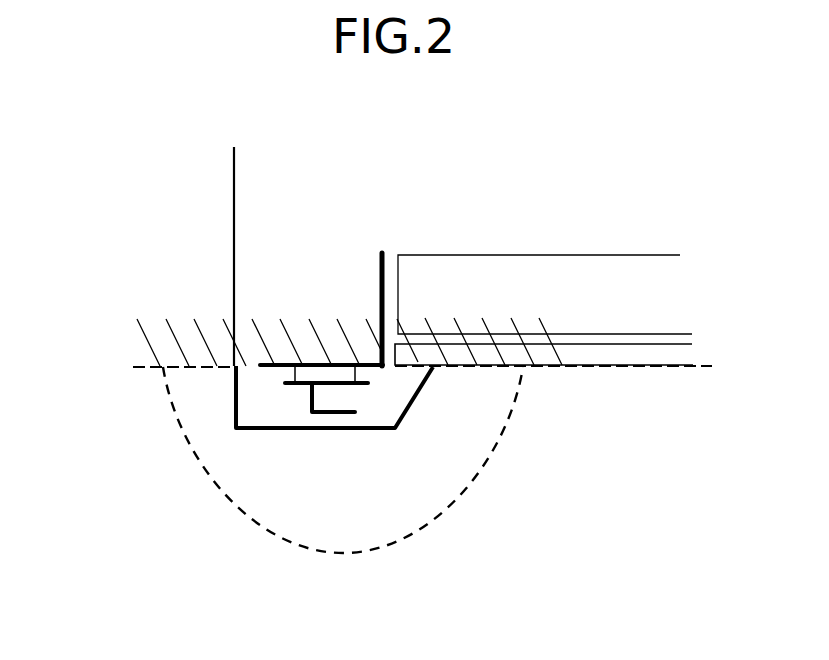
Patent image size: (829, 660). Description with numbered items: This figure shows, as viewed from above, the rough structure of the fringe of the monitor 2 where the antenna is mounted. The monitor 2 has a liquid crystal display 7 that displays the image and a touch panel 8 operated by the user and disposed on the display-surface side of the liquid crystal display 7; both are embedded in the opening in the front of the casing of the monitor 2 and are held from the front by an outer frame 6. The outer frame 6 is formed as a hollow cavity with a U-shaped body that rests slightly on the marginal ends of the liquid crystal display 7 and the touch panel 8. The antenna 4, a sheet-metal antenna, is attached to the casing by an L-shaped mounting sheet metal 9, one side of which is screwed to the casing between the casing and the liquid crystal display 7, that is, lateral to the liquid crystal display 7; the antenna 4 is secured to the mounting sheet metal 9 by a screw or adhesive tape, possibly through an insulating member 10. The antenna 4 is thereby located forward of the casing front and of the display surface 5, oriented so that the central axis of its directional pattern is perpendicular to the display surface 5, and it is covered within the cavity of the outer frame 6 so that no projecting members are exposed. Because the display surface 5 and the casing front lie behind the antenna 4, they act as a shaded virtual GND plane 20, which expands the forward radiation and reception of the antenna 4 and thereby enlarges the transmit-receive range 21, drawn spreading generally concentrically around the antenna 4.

The monitor 2 is at (243, 224).
The antenna 4 is at (310, 401).
The display surface 5 is at (652, 367).
The outer frame 6 is at (234, 391).
The liquid crystal display 7 is at (597, 264).
The touch panel 8 is at (588, 367).
The mounting sheet metal 9 is at (379, 291).
The insulating member 10 is at (294, 374).
The virtual GND plane 20 is at (168, 342).
The transmit-receive range 21 is at (427, 495).